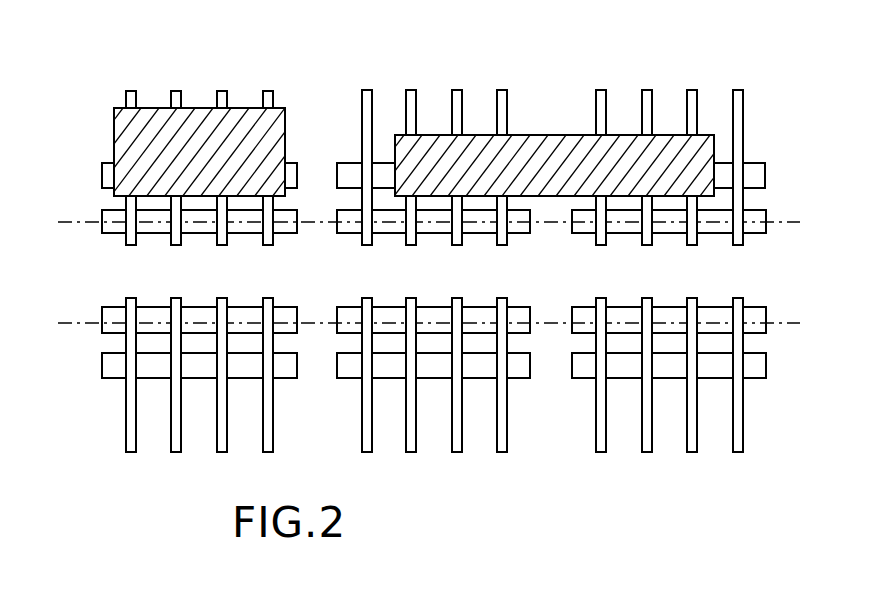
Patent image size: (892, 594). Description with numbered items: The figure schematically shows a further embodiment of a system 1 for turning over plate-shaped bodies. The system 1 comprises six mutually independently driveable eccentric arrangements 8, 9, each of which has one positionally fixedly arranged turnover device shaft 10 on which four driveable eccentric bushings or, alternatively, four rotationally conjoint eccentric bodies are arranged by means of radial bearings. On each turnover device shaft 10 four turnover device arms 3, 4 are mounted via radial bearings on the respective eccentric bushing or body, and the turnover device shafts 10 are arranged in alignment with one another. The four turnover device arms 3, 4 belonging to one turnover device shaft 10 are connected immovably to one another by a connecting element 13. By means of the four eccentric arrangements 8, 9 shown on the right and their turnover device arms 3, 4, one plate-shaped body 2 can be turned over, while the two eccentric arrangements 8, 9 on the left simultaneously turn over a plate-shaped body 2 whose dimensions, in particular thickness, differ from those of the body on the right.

The system 1 is at (76, 46).
The plate-shaped body 2 is at (196, 123).
The turnover device arm 3 is at (176, 99).
The turnover device arm 4 is at (177, 445).
The driveable eccentric arrangement 8 is at (103, 235).
The driveable eccentric arrangement 9 is at (103, 336).
The turnover device shaft 10 is at (110, 214).
The connecting element 13 is at (110, 177).